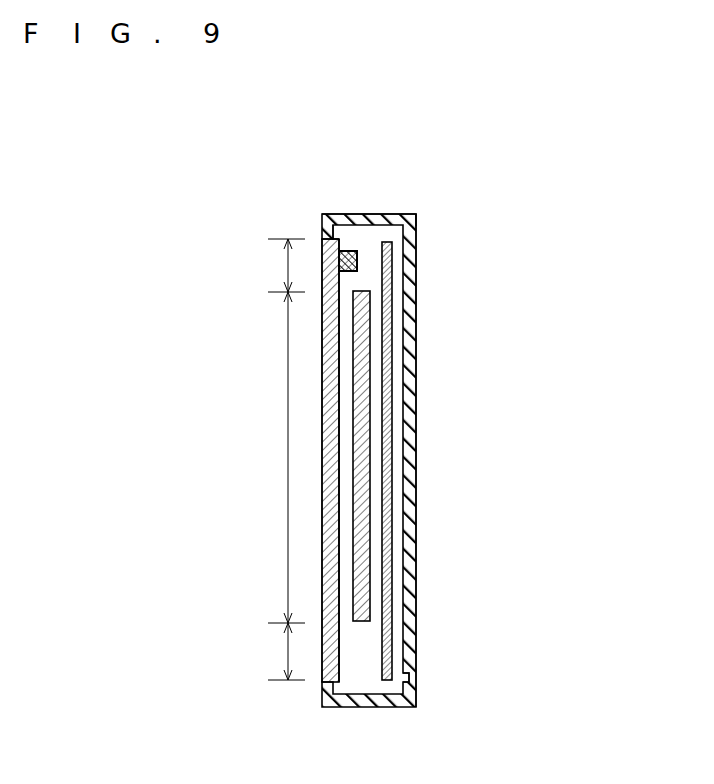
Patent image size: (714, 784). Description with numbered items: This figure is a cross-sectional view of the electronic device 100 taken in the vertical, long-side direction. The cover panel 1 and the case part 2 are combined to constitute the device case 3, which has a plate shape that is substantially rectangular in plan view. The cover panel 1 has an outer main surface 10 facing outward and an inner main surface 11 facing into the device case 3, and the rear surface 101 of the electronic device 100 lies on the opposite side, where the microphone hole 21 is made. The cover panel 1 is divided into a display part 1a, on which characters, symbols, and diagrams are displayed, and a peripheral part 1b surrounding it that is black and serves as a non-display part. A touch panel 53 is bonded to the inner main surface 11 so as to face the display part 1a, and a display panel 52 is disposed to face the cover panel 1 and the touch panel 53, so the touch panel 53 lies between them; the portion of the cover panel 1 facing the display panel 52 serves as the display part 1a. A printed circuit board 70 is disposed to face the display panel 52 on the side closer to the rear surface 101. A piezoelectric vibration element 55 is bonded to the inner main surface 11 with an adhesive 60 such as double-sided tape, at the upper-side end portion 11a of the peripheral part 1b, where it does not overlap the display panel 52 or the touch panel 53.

The electronic device 100 is at (419, 177).
The rear surface 101 is at (417, 238).
The case part 2 is at (407, 345).
The microphone hole 21 is at (409, 677).
The device case 3 is at (368, 213).
The cover panel 1 is at (322, 535).
The outer main surface 10 is at (323, 648).
The inner main surface 11 is at (336, 655).
The upper-side end portion 11a is at (352, 236).
The display part 1a is at (274, 457).
The peripheral part 1b is at (281, 459).
The display panel 52 is at (365, 452).
The touch panel 53 is at (340, 505).
The piezoelectric vibration element 55 is at (357, 258).
The adhesive 60 is at (357, 269).
The printed circuit board 70 is at (391, 405).